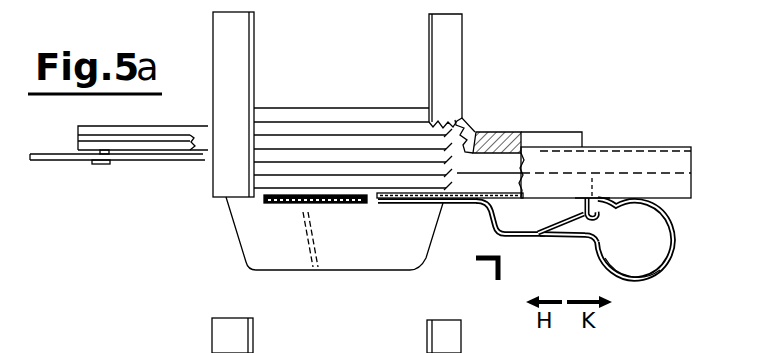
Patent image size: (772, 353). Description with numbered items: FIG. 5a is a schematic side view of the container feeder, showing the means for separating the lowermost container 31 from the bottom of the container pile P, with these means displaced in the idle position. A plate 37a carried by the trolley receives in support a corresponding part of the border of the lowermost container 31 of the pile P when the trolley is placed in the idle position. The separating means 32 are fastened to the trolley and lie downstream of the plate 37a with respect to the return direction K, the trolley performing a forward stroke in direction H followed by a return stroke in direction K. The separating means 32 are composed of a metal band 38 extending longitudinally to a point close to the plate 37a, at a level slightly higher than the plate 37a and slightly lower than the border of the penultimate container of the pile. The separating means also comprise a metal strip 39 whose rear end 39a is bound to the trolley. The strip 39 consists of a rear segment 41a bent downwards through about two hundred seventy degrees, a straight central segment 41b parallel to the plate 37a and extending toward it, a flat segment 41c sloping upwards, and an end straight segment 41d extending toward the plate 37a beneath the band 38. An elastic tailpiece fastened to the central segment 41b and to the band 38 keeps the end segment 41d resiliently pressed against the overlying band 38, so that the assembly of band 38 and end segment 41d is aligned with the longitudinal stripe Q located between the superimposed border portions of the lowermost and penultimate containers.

The container pile P is at (336, 98).
The longitudinal stripe Q is at (340, 197).
The lowermost container 31 is at (257, 257).
The separating means 32 is at (638, 290).
The plate 37a is at (277, 203).
The metal band 38 is at (492, 196).
The metal strip 39 is at (518, 250).
The rear end 39a is at (600, 197).
The rear segment 41a is at (669, 260).
The central segment 41b is at (543, 237).
The flat segment 41c is at (487, 213).
The end straight segment 41d is at (403, 200).